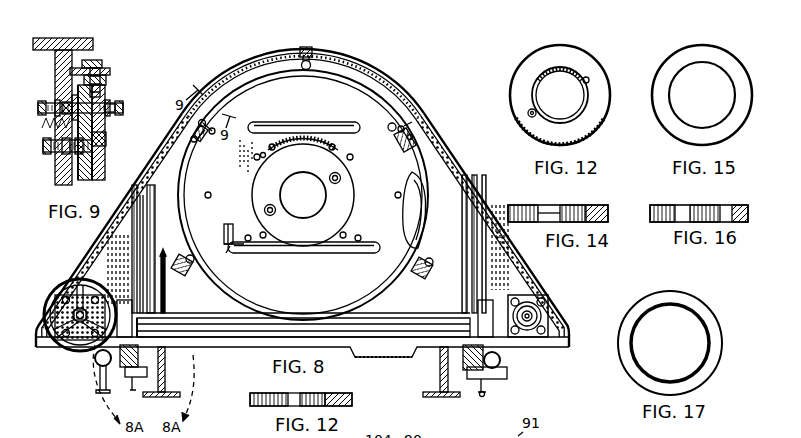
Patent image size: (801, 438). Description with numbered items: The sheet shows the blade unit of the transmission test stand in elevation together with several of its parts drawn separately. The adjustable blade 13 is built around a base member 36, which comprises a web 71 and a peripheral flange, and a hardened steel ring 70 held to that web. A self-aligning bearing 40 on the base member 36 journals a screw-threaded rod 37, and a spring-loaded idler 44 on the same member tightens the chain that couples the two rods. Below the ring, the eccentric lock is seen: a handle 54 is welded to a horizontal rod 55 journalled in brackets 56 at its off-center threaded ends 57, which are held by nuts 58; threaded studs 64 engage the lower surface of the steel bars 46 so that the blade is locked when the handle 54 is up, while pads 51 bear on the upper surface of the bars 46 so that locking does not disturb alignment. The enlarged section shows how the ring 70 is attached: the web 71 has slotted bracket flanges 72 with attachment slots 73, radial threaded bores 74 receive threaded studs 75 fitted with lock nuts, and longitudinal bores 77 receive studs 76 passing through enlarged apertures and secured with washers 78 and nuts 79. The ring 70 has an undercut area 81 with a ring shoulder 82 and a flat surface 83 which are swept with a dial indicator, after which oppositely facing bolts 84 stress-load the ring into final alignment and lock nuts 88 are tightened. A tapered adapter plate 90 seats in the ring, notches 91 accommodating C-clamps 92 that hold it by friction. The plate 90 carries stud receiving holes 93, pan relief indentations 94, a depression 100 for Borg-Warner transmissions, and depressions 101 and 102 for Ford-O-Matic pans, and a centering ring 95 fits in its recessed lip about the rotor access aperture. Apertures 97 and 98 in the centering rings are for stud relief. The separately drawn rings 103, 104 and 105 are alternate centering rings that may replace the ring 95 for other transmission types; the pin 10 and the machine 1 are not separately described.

In FIG. 8, the machine 1 is at (337, 56).
In FIG. 8, the pin 10 is at (204, 130).
In FIG. 8, the adjustable blade 13 is at (258, 63).
In FIG. 8, the base member 36 is at (353, 59).
In FIG. 9, the base member 36 is at (67, 38).
In FIG. 8, the screw-threaded rod 37 is at (66, 352).
In FIG. 8, the self-aligning bearing 40 is at (75, 285).
In FIG. 8, the spring-loaded idler 44 is at (549, 306).
In FIG. 8, the bar 46 is at (140, 357).
In FIG. 8, the pad 51 is at (107, 371).
In FIG. 8, the handle 54 is at (163, 250).
In FIG. 8, the rod 55 is at (430, 322).
In FIG. 8, the bracket 56 is at (133, 292).
In FIG. 8, the threaded end 57 is at (480, 314).
In FIG. 8, the nut 58 is at (462, 288).
In FIG. 8, the threaded stud 64 is at (147, 372).
In FIG. 8, the hardened steel ring 70 is at (276, 70).
In FIG. 9, the hardened steel ring 70 is at (100, 98).
In FIG. 9, the web 71 is at (57, 70).
In FIG. 8, the slotted bracket flange 72 is at (318, 56).
In FIG. 9, the slotted bracket flange 72 is at (105, 66).
In FIG. 8, the attachment slot 73 is at (308, 58).
In FIG. 9, the attachment slot 73 is at (108, 72).
In FIG. 9, the radial threaded bore 74 is at (106, 85).
In FIG. 9, the threaded stud 75 is at (72, 92).
In FIG. 9, the threaded stud 76 is at (43, 150).
In FIG. 9, the longitudinal bore 77 is at (106, 140).
In FIG. 9, the washer 78 is at (75, 154).
In FIG. 9, the nut 79 is at (62, 152).
In FIG. 9, the undercut area 81 is at (106, 128).
In FIG. 9, the ring shoulder 82 is at (112, 110).
In FIG. 9, the flat surface 83 is at (106, 156).
In FIG. 9, the bolt 84 is at (38, 106).
In FIG. 9, the lock nut 88 is at (55, 102).
In FIG. 8, the adapter plate 90 is at (380, 118).
In FIG. 9, the adapter plate 90 is at (105, 172).
In FIG. 8, the notch 91 is at (205, 88).
In FIG. 8, the C-clamp 92 is at (418, 128).
In FIG. 8, the dowel pin and transmission stud receiving hole 93 is at (262, 156).
In FIG. 8, the pan relief indentation 94 is at (307, 126).
In FIG. 8, the centering ring 95 is at (350, 205).
In FIG. 12, the aperture 97 is at (585, 84).
In FIG. 12, the aperture 98 is at (540, 108).
In FIG. 8, the depression 100 is at (283, 122).
In FIG. 8, the depression 101 is at (232, 254).
In FIG. 8, the depression 102 is at (214, 240).
In FIG. 12, the ring 103 is at (598, 92).
In FIG. 14, the ring 103 is at (602, 211).
In FIG. 15, the ring 104 is at (738, 112).
In FIG. 16, the ring 104 is at (748, 212).
In FIG. 17, the ring 105 is at (706, 366).